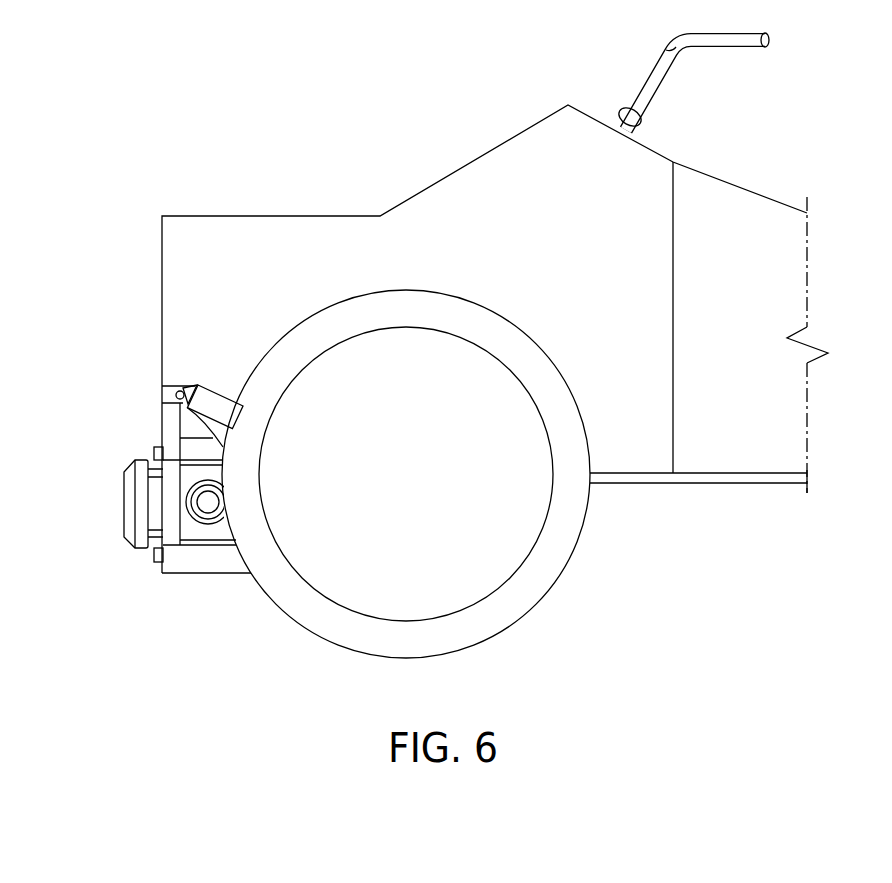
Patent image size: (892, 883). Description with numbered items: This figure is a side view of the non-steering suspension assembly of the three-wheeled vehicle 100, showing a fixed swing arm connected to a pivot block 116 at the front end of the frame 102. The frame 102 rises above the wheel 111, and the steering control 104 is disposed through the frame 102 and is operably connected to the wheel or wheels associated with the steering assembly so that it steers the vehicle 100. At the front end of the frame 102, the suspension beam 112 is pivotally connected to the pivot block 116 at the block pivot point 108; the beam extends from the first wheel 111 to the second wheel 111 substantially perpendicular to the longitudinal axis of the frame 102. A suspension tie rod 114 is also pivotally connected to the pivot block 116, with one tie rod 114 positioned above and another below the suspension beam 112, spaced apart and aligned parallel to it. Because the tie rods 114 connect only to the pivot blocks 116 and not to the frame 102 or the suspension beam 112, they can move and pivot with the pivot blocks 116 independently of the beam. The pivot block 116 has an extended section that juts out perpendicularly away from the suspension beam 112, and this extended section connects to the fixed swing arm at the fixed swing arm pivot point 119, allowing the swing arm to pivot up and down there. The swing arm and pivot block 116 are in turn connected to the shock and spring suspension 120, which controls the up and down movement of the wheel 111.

The three-wheeled vehicle 100 is at (176, 72).
The frame 102 is at (460, 168).
The steering control 104 is at (653, 60).
The block pivot point 108 is at (132, 463).
The wheel 111 is at (507, 610).
The suspension beam 112 is at (127, 481).
The suspension tie rod 114 is at (153, 447).
The pivot block 116 is at (158, 522).
The fixed swing arm pivot point 119 is at (213, 527).
The shock and spring suspension 120 is at (213, 385).